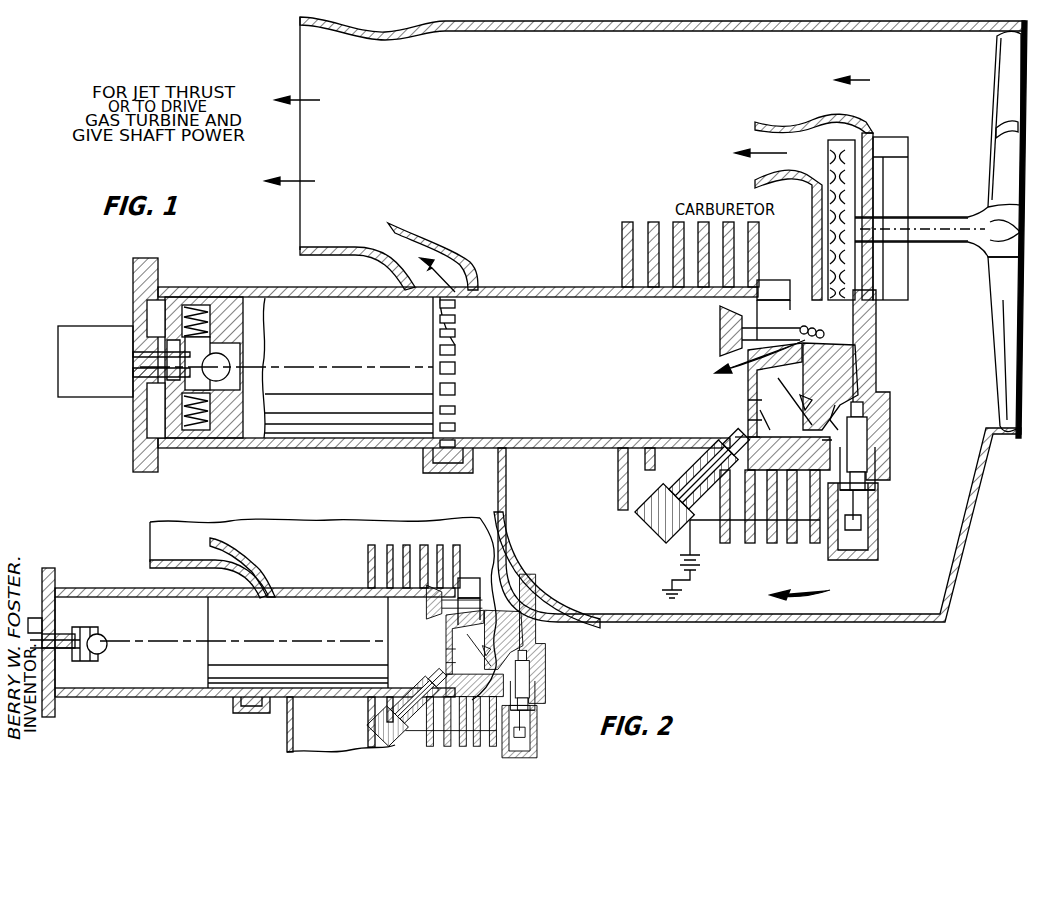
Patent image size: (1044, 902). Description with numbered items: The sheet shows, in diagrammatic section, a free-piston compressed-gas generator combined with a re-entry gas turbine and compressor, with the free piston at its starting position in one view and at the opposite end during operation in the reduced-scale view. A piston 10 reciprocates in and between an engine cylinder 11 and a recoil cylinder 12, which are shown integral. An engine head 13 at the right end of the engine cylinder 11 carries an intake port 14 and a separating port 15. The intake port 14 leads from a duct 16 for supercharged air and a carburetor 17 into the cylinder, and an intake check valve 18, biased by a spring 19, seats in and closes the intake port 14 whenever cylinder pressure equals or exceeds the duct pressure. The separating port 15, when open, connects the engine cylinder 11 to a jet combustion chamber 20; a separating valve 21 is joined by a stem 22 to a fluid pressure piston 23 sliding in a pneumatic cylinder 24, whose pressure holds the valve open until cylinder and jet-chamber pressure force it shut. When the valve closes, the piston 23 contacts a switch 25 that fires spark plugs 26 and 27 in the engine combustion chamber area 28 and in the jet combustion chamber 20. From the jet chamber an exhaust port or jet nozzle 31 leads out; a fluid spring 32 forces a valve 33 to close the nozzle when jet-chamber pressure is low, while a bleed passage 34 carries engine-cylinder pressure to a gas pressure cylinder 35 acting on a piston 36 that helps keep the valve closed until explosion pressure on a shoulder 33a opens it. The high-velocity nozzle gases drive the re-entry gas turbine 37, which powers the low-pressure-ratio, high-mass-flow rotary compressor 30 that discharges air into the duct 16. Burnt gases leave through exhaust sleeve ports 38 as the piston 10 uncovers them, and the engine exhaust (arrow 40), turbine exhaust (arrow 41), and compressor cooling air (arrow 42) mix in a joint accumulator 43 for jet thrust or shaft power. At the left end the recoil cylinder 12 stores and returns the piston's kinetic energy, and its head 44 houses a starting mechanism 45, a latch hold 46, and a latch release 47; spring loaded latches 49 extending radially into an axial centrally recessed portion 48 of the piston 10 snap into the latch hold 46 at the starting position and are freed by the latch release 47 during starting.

In FIG. 1, the piston 10 is at (360, 351).
In FIG. 2, the piston 10 is at (345, 633).
In FIG. 1, the engine cylinder 11 is at (583, 305).
In FIG. 2, the engine cylinder 11 is at (348, 598).
In FIG. 1, the recoil cylinder 12 is at (195, 287).
In FIG. 2, the recoil cylinder 12 is at (72, 585).
In FIG. 1, the engine head 13 is at (748, 386).
In FIG. 2, the engine head 13 is at (448, 648).
In FIG. 1, the intake port 14 is at (760, 305).
In FIG. 2, the intake port 14 is at (455, 605).
In FIG. 1, the separating port 15 is at (762, 418).
In FIG. 2, the separating port 15 is at (452, 670).
In FIG. 1, the duct 16 is at (799, 247).
In FIG. 2, the duct 16 is at (476, 571).
In FIG. 1, the carburetor 17 is at (770, 275).
In FIG. 2, the carburetor 17 is at (469, 588).
In FIG. 1, the intake check valve 18 is at (720, 325).
In FIG. 2, the intake check valve 18 is at (448, 618).
In FIG. 1, the spring 19 is at (800, 325).
In FIG. 1, the jet combustion chamber 20 is at (800, 383).
In FIG. 2, the jet combustion chamber 20 is at (498, 640).
In FIG. 1, the separating valve 21 is at (800, 395).
In FIG. 2, the separating valve 21 is at (480, 655).
In FIG. 1, the stem 22 is at (740, 433).
In FIG. 2, the stem 22 is at (448, 688).
In FIG. 1, the fluid pressure piston 23 is at (715, 500).
In FIG. 2, the fluid pressure piston 23 is at (425, 730).
In FIG. 1, the pneumatic cylinder 24 is at (660, 520).
In FIG. 2, the pneumatic cylinder 24 is at (418, 703).
In FIG. 1, the switch 25 is at (690, 535).
In FIG. 2, the switch 25 is at (410, 758).
In FIG. 1, the spark plug 26 is at (720, 470).
In FIG. 1, the spark plug 27 is at (838, 419).
In FIG. 2, the spark plug 27 is at (498, 665).
In FIG. 1, the engine combustion chamber area 28 is at (748, 403).
In FIG. 2, the engine combustion chamber area 28 is at (448, 679).
In FIG. 1, the compressor 30 is at (995, 288).
In FIG. 1, the jet nozzle 31 is at (880, 372).
In FIG. 2, the jet nozzle 31 is at (538, 646).
In FIG. 1, the fluid spring 32 is at (880, 541).
In FIG. 2, the fluid spring 32 is at (540, 762).
In FIG. 1, the valve 33 is at (870, 425).
In FIG. 2, the valve 33 is at (545, 668).
In FIG. 1, the shoulder 33a is at (880, 405).
In FIG. 2, the shoulder 33a is at (545, 660).
In FIG. 1, the bleed passage 34 is at (875, 455).
In FIG. 2, the bleed passage 34 is at (540, 705).
In FIG. 1, the gas pressure cylinder 35 is at (880, 480).
In FIG. 2, the gas pressure cylinder 35 is at (540, 715).
In FIG. 1, the piston 36 is at (870, 462).
In FIG. 2, the piston 36 is at (540, 697).
In FIG. 1, the re-entry gas turbine 37 is at (855, 188).
In FIG. 1, the exhaust sleeve ports 38 is at (460, 392).
In FIG. 1, the arrow 40 is at (445, 285).
In FIG. 1, the arrow 41 is at (750, 155).
In FIG. 1, the arrow 42 is at (876, 80).
In FIG. 1, the joint accumulator 43 is at (495, 106).
In FIG. 1, the head 44 is at (144, 326).
In FIG. 2, the head 44 is at (58, 615).
In FIG. 1, the starting mechanism 45 is at (131, 366).
In FIG. 2, the starting mechanism 45 is at (58, 650).
In FIG. 1, the latch hold 46 is at (176, 345).
In FIG. 2, the latch hold 46 is at (75, 628).
In FIG. 1, the latch release 47 is at (232, 370).
In FIG. 2, the latch release 47 is at (108, 642).
In FIG. 1, the axial centrally recessed portion 48 is at (220, 350).
In FIG. 1, the spring loaded latches 49 is at (210, 330).